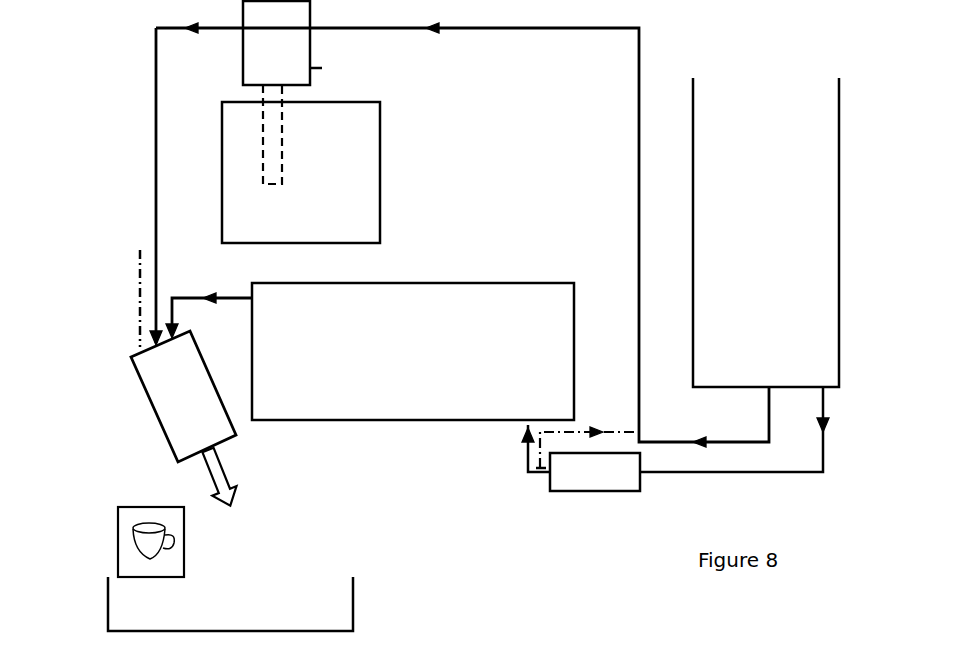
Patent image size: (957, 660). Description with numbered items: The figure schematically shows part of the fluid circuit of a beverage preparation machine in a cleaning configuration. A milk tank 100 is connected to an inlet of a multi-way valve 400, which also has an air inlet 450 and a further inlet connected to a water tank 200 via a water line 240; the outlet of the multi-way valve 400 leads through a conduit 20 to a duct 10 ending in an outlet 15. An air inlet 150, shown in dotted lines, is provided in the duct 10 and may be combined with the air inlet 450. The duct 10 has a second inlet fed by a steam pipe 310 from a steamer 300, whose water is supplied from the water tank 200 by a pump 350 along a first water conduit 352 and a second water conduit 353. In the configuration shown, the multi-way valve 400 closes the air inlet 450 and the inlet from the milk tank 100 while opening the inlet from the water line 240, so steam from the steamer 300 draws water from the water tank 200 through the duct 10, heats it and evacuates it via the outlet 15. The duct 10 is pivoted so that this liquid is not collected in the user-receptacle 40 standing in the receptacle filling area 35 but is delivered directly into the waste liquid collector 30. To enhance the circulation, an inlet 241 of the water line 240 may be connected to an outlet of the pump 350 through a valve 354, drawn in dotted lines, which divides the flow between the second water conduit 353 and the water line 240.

The duct 10 is at (183, 396).
The outlet 15 is at (215, 452).
The conduit 20 is at (155, 182).
The waste liquid collector 30 is at (230, 604).
The receptacle filling area 35 is at (128, 564).
The user-receptacle 40 is at (140, 545).
The milk tank 100 is at (301, 164).
The air inlet 150 is at (114, 298).
The water tank 200 is at (766, 232).
The water line 240 is at (538, 27).
The inlet 241 is at (583, 425).
The steamer 300 is at (413, 351).
The steam pipe 310 is at (245, 293).
The pump 350 is at (618, 475).
The first water conduit 352 is at (768, 470).
The second water conduit 353 is at (525, 440).
The valve 354 is at (538, 477).
The multi-way valve 400 is at (260, 38).
The air inlet 450 is at (360, 68).